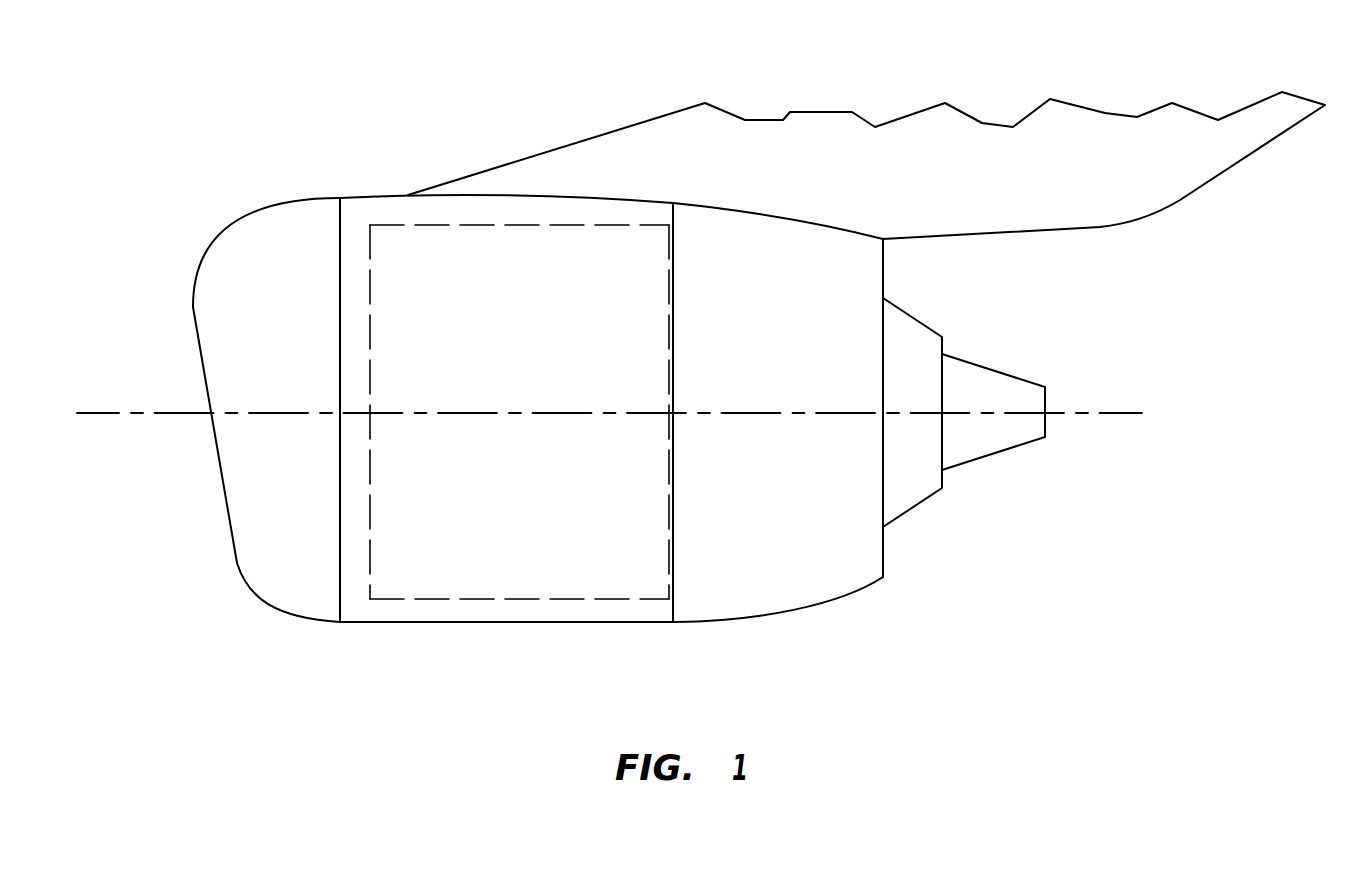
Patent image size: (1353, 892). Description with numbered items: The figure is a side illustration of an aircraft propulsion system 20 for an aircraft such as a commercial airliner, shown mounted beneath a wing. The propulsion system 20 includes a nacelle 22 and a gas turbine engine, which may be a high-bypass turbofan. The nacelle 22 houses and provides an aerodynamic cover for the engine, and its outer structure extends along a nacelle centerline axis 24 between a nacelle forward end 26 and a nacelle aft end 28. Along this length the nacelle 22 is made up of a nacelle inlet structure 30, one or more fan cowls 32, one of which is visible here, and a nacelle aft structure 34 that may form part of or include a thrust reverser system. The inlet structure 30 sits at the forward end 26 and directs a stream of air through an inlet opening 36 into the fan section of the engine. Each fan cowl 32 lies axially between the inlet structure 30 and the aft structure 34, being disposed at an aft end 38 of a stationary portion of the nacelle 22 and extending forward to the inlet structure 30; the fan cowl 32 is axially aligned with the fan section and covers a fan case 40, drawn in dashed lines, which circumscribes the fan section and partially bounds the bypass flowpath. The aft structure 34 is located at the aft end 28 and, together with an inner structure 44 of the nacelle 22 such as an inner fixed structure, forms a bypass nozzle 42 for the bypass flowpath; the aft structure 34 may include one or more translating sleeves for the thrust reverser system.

The aircraft propulsion system 20 is at (219, 178).
The nacelle 22 is at (308, 192).
The nacelle centerline axis 24 is at (1132, 415).
The nacelle forward end 26 is at (192, 330).
The nacelle aft end 28 is at (883, 265).
The nacelle inlet structure 30 is at (250, 597).
The fan cowl 32 is at (468, 632).
The nacelle aft structure 34 is at (773, 620).
The inlet opening 36 is at (192, 377).
The aft end of stationary portion of the nacelle 38 is at (678, 218).
The fan case 40 is at (615, 601).
The bypass nozzle 42 is at (885, 553).
The inner structure 44 is at (920, 504).